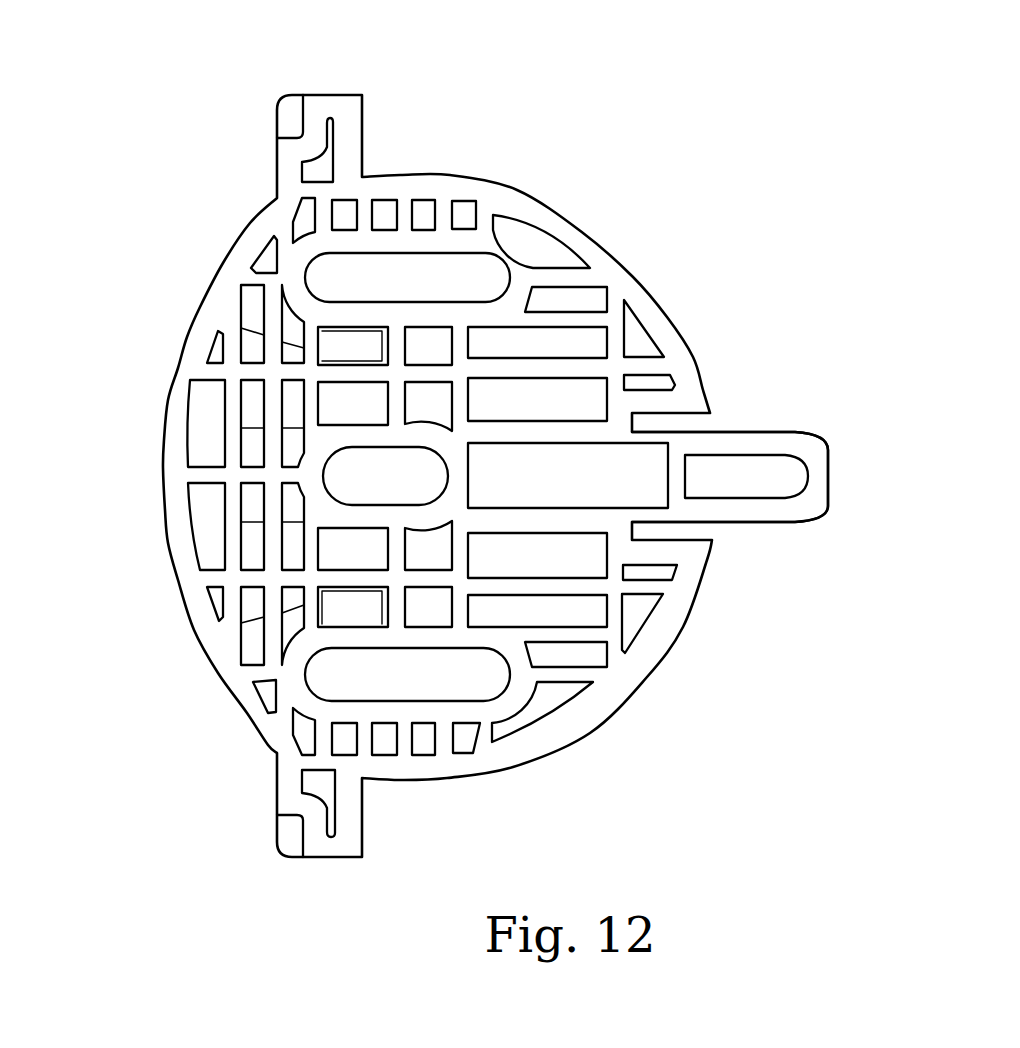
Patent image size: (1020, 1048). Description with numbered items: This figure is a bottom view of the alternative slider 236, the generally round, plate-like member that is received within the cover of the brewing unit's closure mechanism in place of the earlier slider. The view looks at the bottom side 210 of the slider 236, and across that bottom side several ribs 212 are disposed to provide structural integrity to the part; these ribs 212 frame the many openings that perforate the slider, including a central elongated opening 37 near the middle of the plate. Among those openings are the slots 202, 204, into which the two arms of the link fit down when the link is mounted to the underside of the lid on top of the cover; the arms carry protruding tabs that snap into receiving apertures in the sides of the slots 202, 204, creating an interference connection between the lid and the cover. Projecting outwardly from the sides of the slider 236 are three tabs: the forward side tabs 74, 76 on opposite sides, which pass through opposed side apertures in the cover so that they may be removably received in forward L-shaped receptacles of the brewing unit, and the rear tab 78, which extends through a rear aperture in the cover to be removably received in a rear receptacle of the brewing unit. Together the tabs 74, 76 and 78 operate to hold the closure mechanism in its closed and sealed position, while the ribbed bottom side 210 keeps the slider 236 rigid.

The slider 236 is at (774, 186).
The forward side tab 76 is at (322, 112).
The forward side tab 74 is at (342, 840).
The rear tab 78 is at (822, 485).
The central slot 37 is at (417, 468).
The slot 204 is at (252, 405).
The slot 202 is at (252, 548).
The ribs 212 is at (557, 523).
The bottom side 210 is at (555, 612).